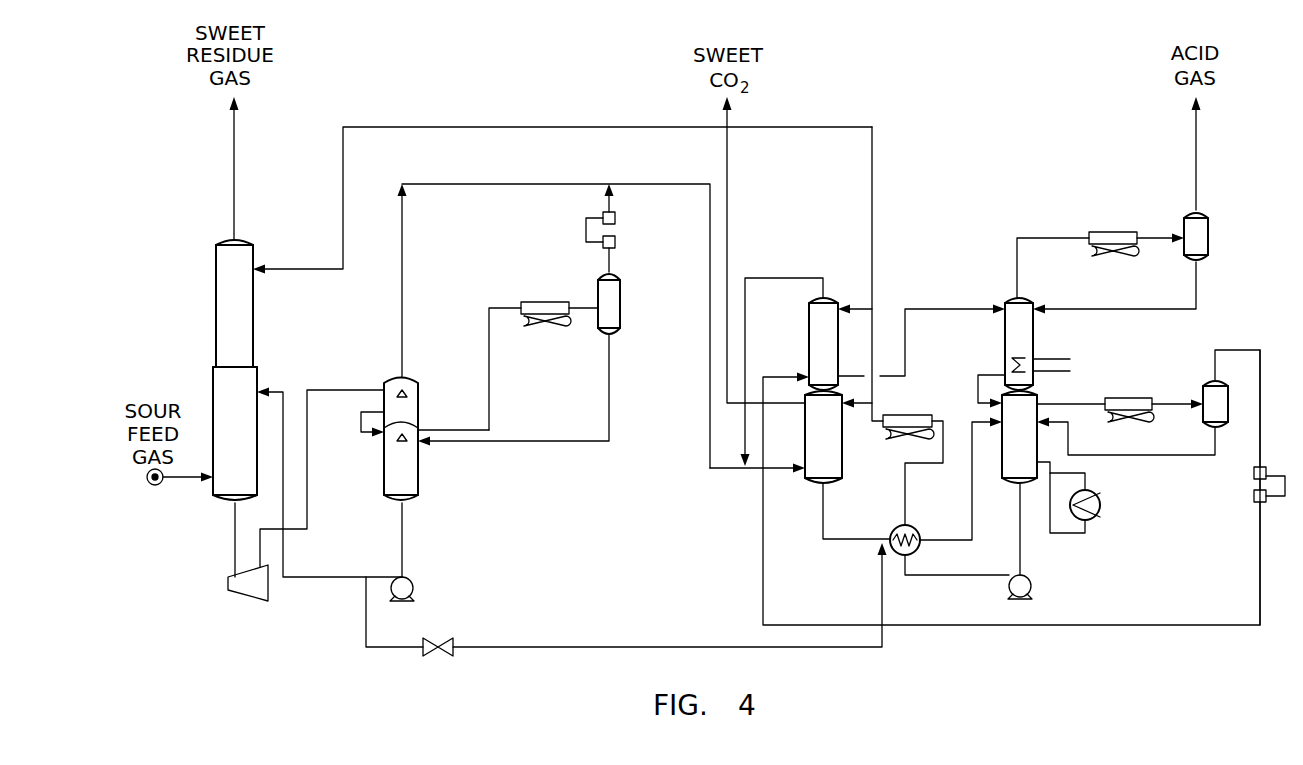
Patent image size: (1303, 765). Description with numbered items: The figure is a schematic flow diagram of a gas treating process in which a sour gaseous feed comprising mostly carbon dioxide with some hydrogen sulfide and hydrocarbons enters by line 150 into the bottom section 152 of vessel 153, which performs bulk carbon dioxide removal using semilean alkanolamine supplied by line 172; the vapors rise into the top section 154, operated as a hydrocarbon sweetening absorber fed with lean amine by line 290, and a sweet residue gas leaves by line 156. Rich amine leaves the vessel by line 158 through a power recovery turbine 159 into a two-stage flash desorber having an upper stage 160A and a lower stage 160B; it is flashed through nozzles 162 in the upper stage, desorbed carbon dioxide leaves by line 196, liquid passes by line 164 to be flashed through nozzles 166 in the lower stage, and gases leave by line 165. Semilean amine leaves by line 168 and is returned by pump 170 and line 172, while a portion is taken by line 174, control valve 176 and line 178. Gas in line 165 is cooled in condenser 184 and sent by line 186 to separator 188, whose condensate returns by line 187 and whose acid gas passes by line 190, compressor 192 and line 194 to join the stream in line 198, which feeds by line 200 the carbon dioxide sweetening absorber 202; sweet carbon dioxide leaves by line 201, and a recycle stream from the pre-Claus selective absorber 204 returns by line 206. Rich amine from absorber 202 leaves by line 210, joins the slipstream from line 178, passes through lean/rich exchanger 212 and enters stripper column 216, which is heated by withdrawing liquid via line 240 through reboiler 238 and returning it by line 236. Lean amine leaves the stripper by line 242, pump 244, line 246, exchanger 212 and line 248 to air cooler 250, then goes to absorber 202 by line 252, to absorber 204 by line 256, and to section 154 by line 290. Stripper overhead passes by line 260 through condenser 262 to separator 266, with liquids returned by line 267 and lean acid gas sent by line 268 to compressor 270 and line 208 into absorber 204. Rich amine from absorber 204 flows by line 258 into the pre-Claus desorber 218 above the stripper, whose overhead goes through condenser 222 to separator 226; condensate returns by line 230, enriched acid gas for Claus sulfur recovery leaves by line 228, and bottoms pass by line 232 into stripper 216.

The line 150 is at (188, 479).
The bottom section 152 is at (213, 400).
The vessel 153 is at (216, 368).
The top section 154 is at (215, 305).
The line 156 is at (233, 172).
The line 158 is at (235, 539).
The power recovery turbine 159 is at (253, 599).
The upper stage 160A is at (384, 388).
The lower stage 160B is at (420, 455).
The nozzles 162 is at (420, 410).
The line 164 is at (361, 425).
The line 165 is at (490, 398).
The nozzles 166 is at (400, 437).
The line 168 is at (425, 530).
The pump 170 is at (408, 599).
The line 172 is at (345, 580).
The line 174 is at (366, 623).
The control valve 176 is at (432, 656).
The line 178 is at (597, 648).
The condenser 184 is at (537, 302).
The line 186 is at (582, 310).
The line 187 is at (510, 441).
The separator 188 is at (598, 298).
The line 190 is at (603, 250).
The compressor 192 is at (586, 232).
The line 194 is at (603, 214).
The line 196 is at (403, 340).
The line 198 is at (710, 424).
The line 200 is at (757, 475).
The line 201 is at (730, 180).
The line 206 is at (757, 278).
The CO2 sweetening absorber 202 is at (843, 468).
The pre-Claus H2S selective absorber 204 is at (809, 345).
The line 208 is at (763, 600).
The line 210 is at (828, 542).
The lean/rich heat exchanger 212 is at (918, 533).
The stripper column 216 is at (1040, 458).
The pre-Claus H2S desorber 218 is at (1060, 345).
The condenser 222 is at (1100, 232).
The separator 226 is at (1210, 230).
The line 228 is at (1198, 157).
The line 230 is at (1180, 308).
The line 232 is at (977, 397).
The line 236 is at (1060, 477).
The reboiler 238 is at (1100, 500).
The line 240 is at (1075, 535).
The line 242 is at (1021, 548).
The pump 244 is at (1032, 588).
The line 246 is at (930, 578).
The line 248 is at (904, 516).
The air cooler 250 is at (890, 414).
The line 252 is at (861, 408).
The line 256 is at (862, 305).
The line 258 is at (925, 340).
The line 260 is at (1055, 400).
The condenser 262 is at (1138, 398).
The separator 266 is at (1203, 378).
The line 267 is at (1177, 458).
The line 268 is at (1262, 378).
The compressor 270 is at (1254, 495).
The line 290 is at (277, 268).